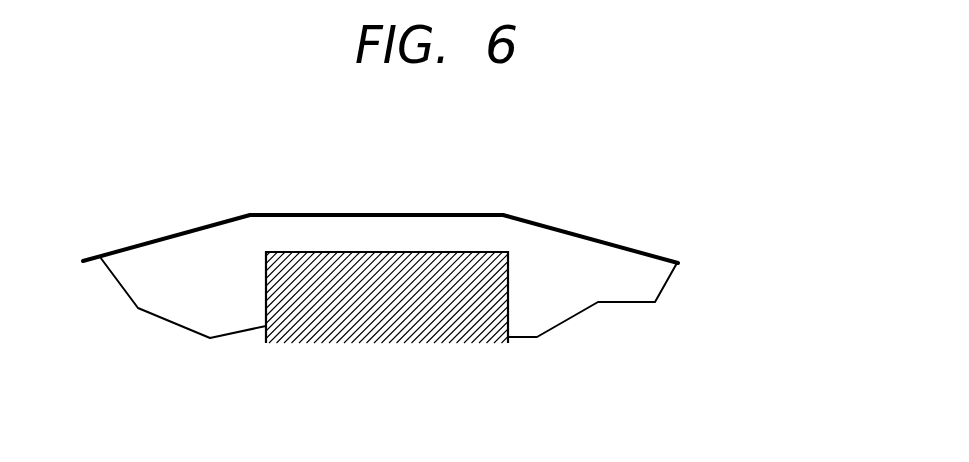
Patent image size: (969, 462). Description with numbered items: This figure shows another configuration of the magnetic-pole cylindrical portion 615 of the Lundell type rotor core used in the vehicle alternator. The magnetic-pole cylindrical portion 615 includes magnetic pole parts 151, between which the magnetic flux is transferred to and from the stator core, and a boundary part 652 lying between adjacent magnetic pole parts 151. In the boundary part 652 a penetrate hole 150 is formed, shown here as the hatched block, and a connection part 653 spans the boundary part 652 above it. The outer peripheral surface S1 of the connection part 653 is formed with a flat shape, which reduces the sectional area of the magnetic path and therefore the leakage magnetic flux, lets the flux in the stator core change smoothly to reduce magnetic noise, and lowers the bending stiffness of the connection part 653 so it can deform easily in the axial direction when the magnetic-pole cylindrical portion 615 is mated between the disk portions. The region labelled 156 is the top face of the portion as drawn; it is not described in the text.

The magnetic-pole cylindrical portion 615 is at (712, 282).
The top surface 156 is at (423, 215).
The outer peripheral surface S1 is at (302, 215).
The boundary part 652 is at (341, 232).
The connection part 653 is at (467, 235).
The magnetic pole part 151 is at (185, 293).
The penetrate hole 150 is at (321, 317).